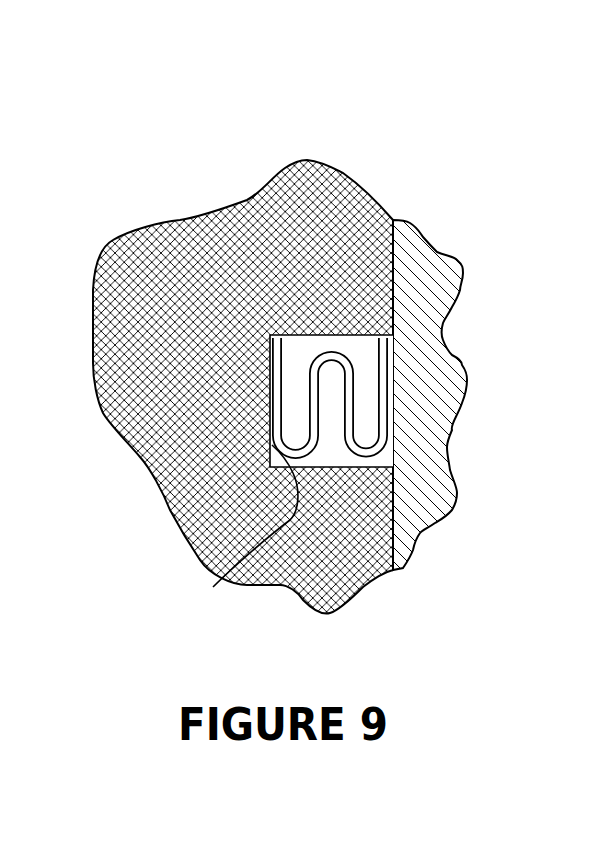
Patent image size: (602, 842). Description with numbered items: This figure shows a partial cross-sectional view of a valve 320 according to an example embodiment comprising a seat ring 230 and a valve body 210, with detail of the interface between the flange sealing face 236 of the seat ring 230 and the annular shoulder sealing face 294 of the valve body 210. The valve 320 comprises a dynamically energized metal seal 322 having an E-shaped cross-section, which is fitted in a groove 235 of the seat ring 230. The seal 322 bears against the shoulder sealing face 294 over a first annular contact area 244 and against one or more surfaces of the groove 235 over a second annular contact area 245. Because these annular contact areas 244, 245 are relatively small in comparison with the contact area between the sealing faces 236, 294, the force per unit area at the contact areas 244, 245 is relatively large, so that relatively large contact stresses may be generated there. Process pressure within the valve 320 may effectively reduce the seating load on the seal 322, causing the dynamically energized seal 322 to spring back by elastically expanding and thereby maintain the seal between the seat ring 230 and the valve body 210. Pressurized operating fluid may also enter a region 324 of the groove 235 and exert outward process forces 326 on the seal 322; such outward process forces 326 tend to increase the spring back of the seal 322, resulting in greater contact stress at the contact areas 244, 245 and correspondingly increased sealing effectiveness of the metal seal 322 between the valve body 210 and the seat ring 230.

The valve 320 is at (110, 184).
The dynamically energized metal seal 322 is at (362, 352).
The outward process forces 326 is at (303, 347).
The annular shoulder sealing face 294 is at (371, 198).
The flange sealing face 236 is at (393, 245).
The valve body 210 is at (445, 295).
The region 324 is at (370, 340).
The first annular contact area 244 is at (404, 353).
The second annular contact area 245 is at (258, 356).
The seat ring 230 is at (177, 477).
The groove 235 is at (213, 587).